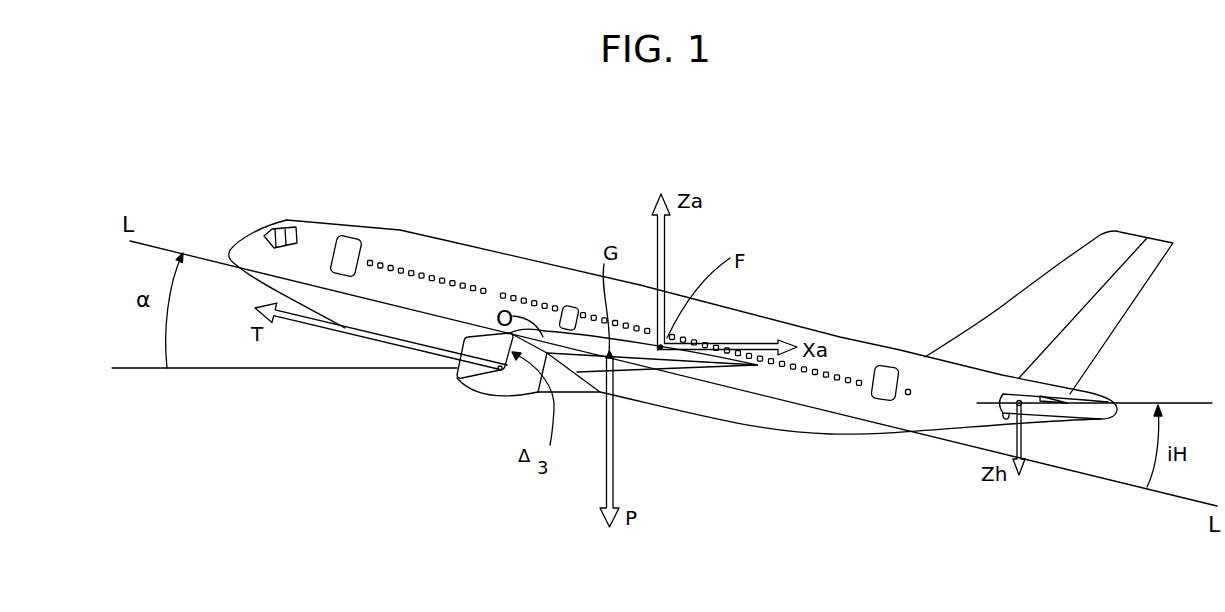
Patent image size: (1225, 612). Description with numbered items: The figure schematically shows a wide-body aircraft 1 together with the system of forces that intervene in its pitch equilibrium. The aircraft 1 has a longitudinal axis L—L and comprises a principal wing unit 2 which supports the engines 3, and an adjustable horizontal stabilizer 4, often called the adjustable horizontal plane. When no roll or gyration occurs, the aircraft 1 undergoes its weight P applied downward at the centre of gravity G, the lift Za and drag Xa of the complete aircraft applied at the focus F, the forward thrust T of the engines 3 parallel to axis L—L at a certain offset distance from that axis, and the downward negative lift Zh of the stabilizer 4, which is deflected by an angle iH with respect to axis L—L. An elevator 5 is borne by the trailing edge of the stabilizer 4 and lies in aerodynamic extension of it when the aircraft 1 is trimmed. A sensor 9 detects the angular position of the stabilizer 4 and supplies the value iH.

The wide body aircraft 1 is at (447, 252).
The principal wing unit 2 is at (647, 355).
The engines 3 is at (490, 382).
The adjustable horizontal stabilizer 4 is at (1041, 398).
The elevator 5 is at (1052, 399).
The sensor 9 is at (1000, 417).